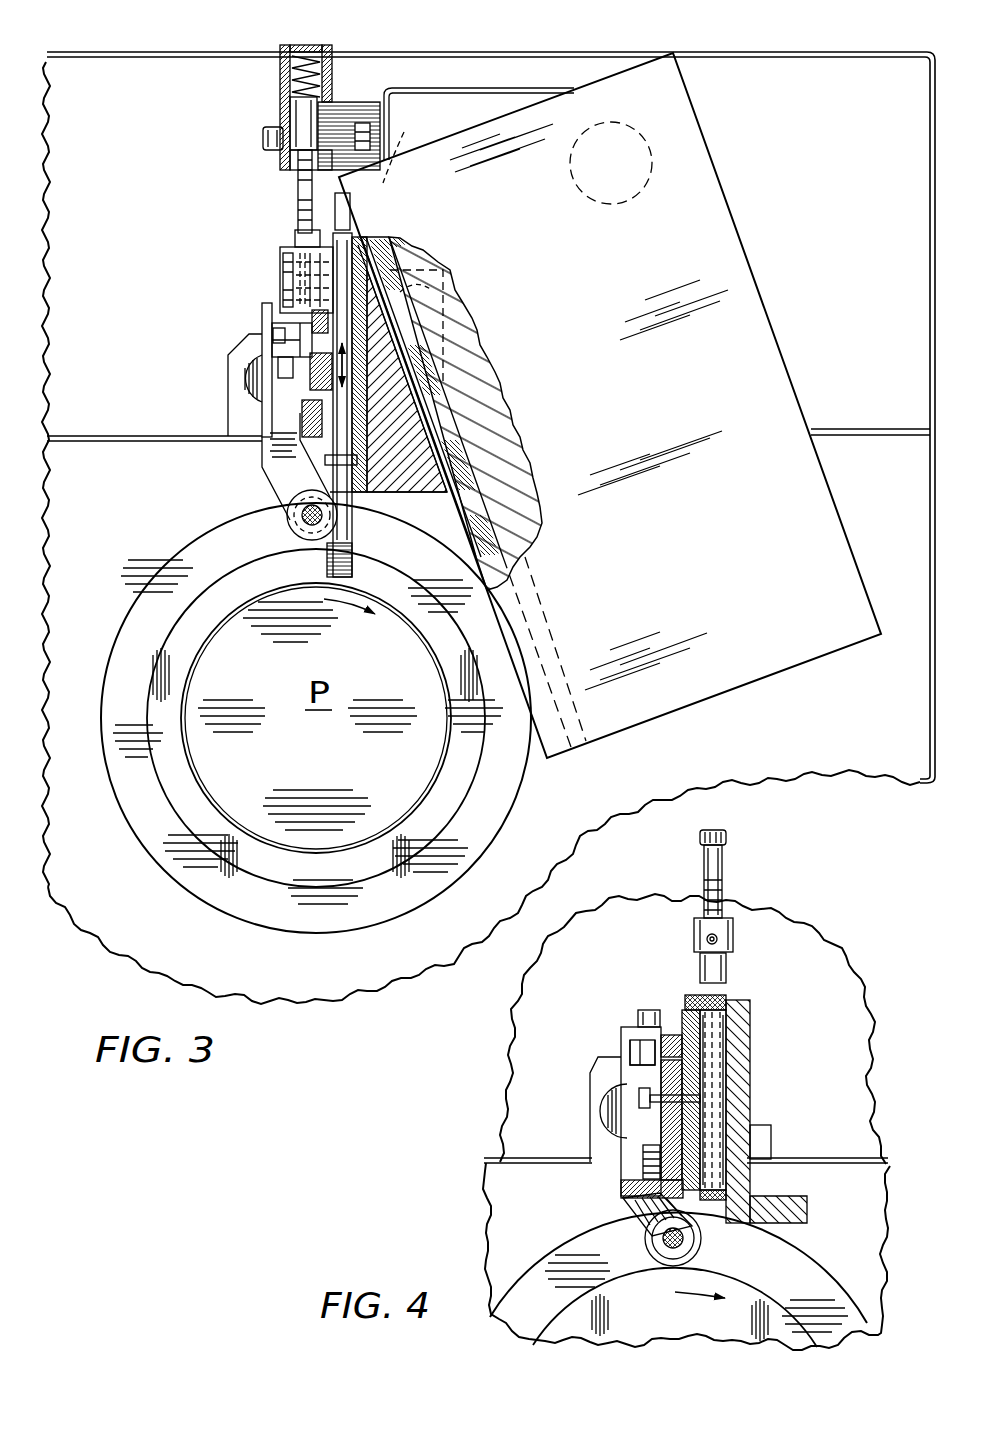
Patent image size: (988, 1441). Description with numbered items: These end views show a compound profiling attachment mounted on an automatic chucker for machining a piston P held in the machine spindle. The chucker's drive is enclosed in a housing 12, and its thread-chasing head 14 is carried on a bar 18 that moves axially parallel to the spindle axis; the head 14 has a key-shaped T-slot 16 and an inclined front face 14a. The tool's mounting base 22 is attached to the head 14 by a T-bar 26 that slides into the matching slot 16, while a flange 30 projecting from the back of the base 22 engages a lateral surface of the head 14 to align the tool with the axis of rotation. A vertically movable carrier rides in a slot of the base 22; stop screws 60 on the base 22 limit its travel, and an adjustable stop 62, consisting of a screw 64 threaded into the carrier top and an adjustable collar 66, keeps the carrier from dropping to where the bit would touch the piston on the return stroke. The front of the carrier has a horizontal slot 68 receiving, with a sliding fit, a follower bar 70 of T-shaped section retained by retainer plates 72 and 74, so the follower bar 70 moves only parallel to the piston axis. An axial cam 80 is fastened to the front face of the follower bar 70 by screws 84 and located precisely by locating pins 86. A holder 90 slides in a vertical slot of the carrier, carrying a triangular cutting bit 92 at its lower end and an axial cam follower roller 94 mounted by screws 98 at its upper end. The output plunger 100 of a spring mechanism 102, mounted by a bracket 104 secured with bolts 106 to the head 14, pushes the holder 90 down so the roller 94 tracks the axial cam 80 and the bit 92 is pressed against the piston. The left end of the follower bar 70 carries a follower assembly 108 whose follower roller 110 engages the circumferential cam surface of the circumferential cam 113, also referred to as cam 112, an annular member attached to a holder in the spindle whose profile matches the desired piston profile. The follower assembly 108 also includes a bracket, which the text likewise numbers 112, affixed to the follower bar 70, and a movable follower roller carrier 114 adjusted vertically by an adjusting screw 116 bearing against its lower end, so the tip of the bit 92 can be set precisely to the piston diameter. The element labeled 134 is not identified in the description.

In FIG. 3, the housing 12 is at (127, 530).
In FIG. 4, the housing 12 is at (531, 1252).
In FIG. 3, the thread-chasing head 14 is at (647, 437).
In FIG. 3, the inclined front face 14a is at (498, 650).
In FIG. 3, the key-shaped slot 16 is at (514, 552).
In FIG. 3, the bar 18 is at (605, 205).
In FIG. 3, the mounting base 22 is at (405, 483).
In FIG. 4, the mounting base 22 is at (738, 1018).
In FIG. 3, the T-bar 26 is at (402, 243).
In FIG. 3, the flange 30 is at (443, 318).
In FIG. 3, the stop screws 60 is at (362, 492).
In FIG. 4, the adjustable stop 62 is at (728, 861).
In FIG. 4, the screw 64 is at (707, 871).
In FIG. 3, the adjustable collar 66 is at (337, 217).
In FIG. 4, the adjustable collar 66 is at (733, 937).
In FIG. 4, the horizontal slot 68 is at (690, 1071).
In FIG. 3, the follower bar 70 is at (336, 395).
In FIG. 4, the follower bar 70 is at (698, 1117).
In FIG. 3, the retainer plate 72 is at (310, 397).
In FIG. 4, the retainer plate 72 is at (683, 1150).
In FIG. 3, the retainer plate 74 is at (313, 328).
In FIG. 4, the retainer plate 74 is at (680, 1037).
In FIG. 3, the axial cam 80 is at (298, 382).
In FIG. 4, the axial cam 80 is at (639, 1071).
In FIG. 3, the screws 84 is at (280, 367).
In FIG. 4, the screws 84 is at (643, 1100).
In FIG. 4, the locating pins 86 is at (670, 1098).
In FIG. 3, the holder 90 is at (283, 250).
In FIG. 3, the cutting bit 92 is at (315, 567).
In FIG. 3, the axial cam follower roller 94 is at (297, 347).
In FIG. 3, the screws 98 is at (288, 293).
In FIG. 3, the output plunger 100 is at (298, 193).
In FIG. 3, the spring mechanism 102 is at (277, 90).
In FIG. 3, the bracket 104 is at (383, 103).
In FIG. 3, the bolts 106 is at (367, 138).
In FIG. 3, the follower assembly 108 is at (258, 340).
In FIG. 4, the follower assembly 108 is at (616, 1032).
In FIG. 3, the follower roller 110 is at (299, 528).
In FIG. 4, the follower roller 110 is at (700, 1247).
In FIG. 3, the circumferential cam 112 is at (187, 803).
In FIG. 4, the circumferential cam 112 is at (647, 1323).
In FIG. 4, the circumferential cam 113 is at (629, 1145).
In FIG. 4, the follower roller carrier 114 is at (622, 1045).
In FIG. 4, the adjusting screw 116 is at (643, 1162).
In FIG. 3, the side plate 134 is at (247, 423).